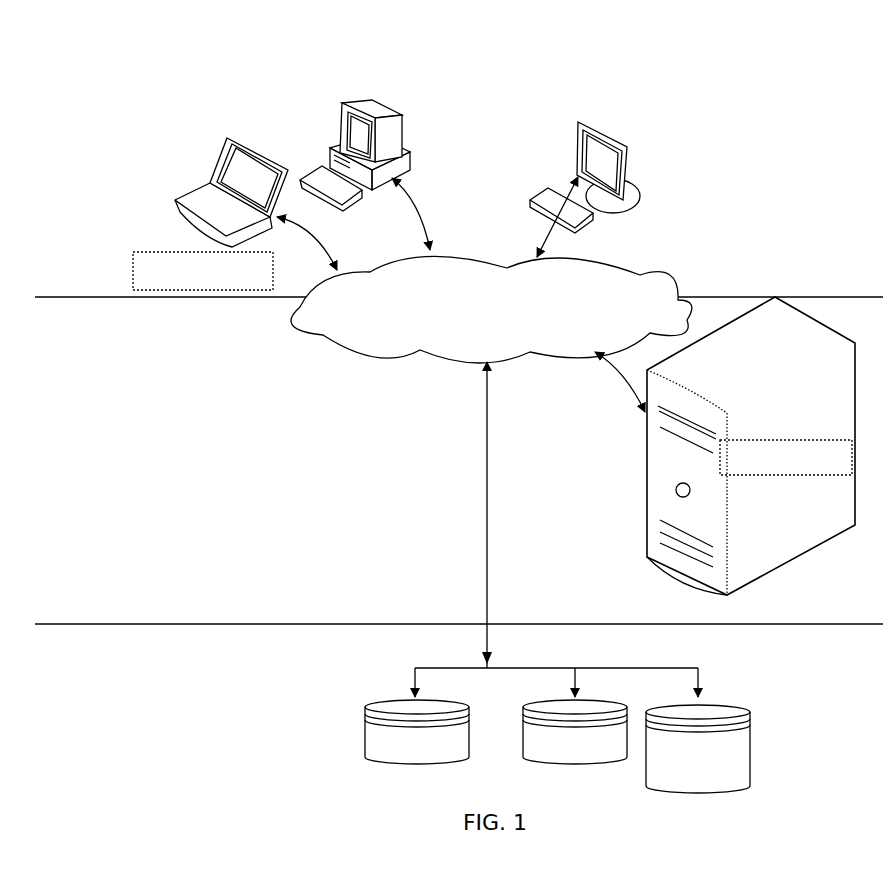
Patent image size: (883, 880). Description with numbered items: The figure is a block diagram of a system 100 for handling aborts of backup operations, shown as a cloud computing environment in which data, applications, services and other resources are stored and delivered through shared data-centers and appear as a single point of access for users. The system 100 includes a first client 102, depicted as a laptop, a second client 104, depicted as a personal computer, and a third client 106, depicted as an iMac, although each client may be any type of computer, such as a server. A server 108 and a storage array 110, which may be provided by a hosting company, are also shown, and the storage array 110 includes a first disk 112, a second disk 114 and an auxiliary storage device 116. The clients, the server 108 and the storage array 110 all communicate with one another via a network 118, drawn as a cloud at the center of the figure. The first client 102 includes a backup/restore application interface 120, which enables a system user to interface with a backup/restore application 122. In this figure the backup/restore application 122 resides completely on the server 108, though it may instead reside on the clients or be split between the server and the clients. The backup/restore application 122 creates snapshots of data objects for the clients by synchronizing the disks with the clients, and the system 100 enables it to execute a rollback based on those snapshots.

The system 100 is at (712, 99).
The first client 102 is at (226, 137).
The second client 104 is at (340, 103).
The third client 106 is at (578, 123).
The server 108 is at (647, 522).
The storage array 110 is at (633, 667).
The first disk 112 is at (378, 702).
The second disk 114 is at (533, 703).
The auxiliary storage device 116 is at (675, 710).
The network 118 is at (491, 309).
The backup/restore application interface 120 is at (273, 252).
The backup/restore application 122 is at (786, 457).